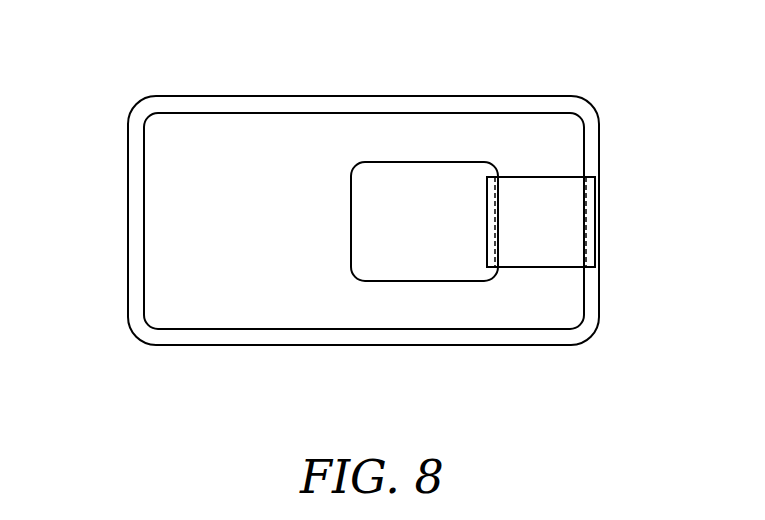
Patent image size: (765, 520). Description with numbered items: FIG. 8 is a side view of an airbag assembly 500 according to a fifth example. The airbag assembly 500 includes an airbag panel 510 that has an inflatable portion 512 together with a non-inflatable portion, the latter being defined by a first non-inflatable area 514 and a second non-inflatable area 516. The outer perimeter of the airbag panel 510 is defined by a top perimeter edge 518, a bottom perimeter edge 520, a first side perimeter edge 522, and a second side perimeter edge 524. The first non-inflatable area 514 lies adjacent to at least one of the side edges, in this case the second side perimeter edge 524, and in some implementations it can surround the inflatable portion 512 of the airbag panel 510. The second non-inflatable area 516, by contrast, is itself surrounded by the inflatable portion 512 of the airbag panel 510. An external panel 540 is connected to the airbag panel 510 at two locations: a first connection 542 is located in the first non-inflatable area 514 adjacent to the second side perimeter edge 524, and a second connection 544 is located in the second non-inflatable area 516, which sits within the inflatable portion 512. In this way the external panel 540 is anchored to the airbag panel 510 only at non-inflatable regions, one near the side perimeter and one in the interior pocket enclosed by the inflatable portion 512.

The airbag assembly 500 is at (125, 60).
The airbag panel 510 is at (128, 153).
The inflatable portion 512 is at (152, 190).
The first non-inflatable area 514 is at (135, 228).
The second non-inflatable area 516 is at (365, 215).
The top perimeter edge 518 is at (528, 96).
The bottom perimeter edge 520 is at (182, 345).
The first side perimeter edge 522 is at (128, 265).
The second side perimeter edge 524 is at (600, 152).
The external panel 540 is at (595, 205).
The first connection 542 is at (586, 240).
The second connection 544 is at (495, 240).